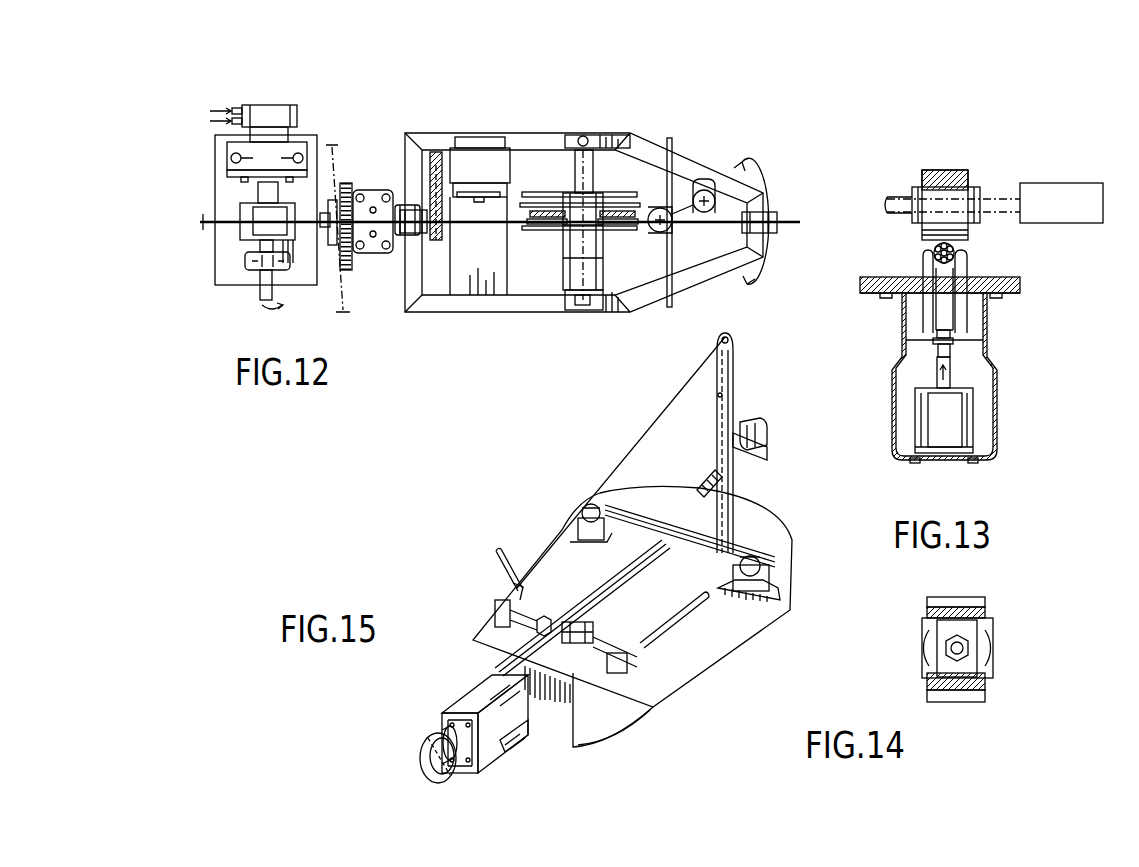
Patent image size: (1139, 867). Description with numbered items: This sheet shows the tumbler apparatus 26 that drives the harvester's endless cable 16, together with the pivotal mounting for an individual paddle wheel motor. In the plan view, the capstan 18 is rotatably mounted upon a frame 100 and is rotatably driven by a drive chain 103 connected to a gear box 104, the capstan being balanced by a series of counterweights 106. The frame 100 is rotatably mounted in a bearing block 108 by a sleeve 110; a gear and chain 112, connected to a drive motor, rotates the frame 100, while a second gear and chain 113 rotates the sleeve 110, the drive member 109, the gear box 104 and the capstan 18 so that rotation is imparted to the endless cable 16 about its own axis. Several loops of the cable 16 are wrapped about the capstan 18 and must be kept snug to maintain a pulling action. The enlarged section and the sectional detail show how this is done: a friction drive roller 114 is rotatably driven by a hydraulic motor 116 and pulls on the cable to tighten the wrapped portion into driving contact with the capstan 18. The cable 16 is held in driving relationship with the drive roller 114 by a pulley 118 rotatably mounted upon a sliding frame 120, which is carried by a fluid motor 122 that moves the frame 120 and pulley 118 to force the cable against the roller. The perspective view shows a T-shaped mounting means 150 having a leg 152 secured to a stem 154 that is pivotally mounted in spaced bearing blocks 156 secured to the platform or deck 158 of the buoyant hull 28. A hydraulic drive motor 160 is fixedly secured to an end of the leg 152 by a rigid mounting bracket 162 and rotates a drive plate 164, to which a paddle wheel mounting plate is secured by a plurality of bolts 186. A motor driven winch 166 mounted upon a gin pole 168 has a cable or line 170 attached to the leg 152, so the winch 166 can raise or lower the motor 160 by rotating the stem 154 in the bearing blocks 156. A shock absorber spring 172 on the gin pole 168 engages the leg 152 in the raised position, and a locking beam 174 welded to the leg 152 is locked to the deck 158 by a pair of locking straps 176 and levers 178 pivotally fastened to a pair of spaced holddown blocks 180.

In FIG. 12, the endless cable 16 is at (208, 225).
In FIG. 13, the endless cable 16 is at (953, 247).
In FIG. 12, the capstan 18 is at (528, 231).
In FIG. 12, the tumbler apparatus 26 is at (667, 130).
In FIG. 15, the buoyant hull 28 is at (623, 718).
In FIG. 12, the frame 100 is at (682, 160).
In FIG. 12, the drive chain 103 is at (510, 192).
In FIG. 12, the gear box 104 is at (467, 158).
In FIG. 12, the counterweights 106 is at (565, 267).
In FIG. 12, the bearing block 108 is at (377, 192).
In FIG. 12, the drive member 109 is at (412, 245).
In FIG. 12, the sleeve 110 is at (325, 210).
In FIG. 12, the gear and chain 112 is at (346, 183).
In FIG. 12, the gear and chain 113 is at (328, 245).
In FIG. 12, the friction drive roller 114 is at (260, 217).
In FIG. 13, the friction drive roller 114 is at (967, 172).
In FIG. 12, the hydraulic motor 116 is at (297, 110).
In FIG. 13, the hydraulic motor 116 is at (1103, 202).
In FIG. 13, the pulley 118 is at (927, 257).
In FIG. 13, the sliding frame 120 is at (928, 347).
In FIG. 14, the sliding frame 120 is at (987, 628).
In FIG. 13, the fluid motor 122 is at (943, 445).
In FIG. 14, the fluid motor 122 is at (928, 657).
In FIG. 15, the T-shaped mounting means 150 is at (720, 653).
In FIG. 15, the leg 152 is at (640, 563).
In FIG. 15, the stem 154 is at (652, 522).
In FIG. 15, the bearing blocks 156 is at (602, 502).
In FIG. 15, the platform or deck 158 is at (750, 626).
In FIG. 15, the hydraulic drive motor 160 is at (467, 703).
In FIG. 15, the rigid mounting bracket 162 is at (520, 730).
In FIG. 15, the drive plate 164 is at (438, 724).
In FIG. 15, the motor driven winch 166 is at (760, 425).
In FIG. 15, the gin pole 168 is at (733, 490).
In FIG. 15, the cable or line 170 is at (612, 418).
In FIG. 15, the shock absorber spring 172 is at (710, 473).
In FIG. 15, the locking beam 174 is at (620, 637).
In FIG. 15, the locking straps 176 is at (493, 590).
In FIG. 15, the levers 178 is at (510, 560).
In FIG. 15, the holddown blocks 180 is at (470, 632).
In FIG. 15, the bolts 186 is at (425, 764).